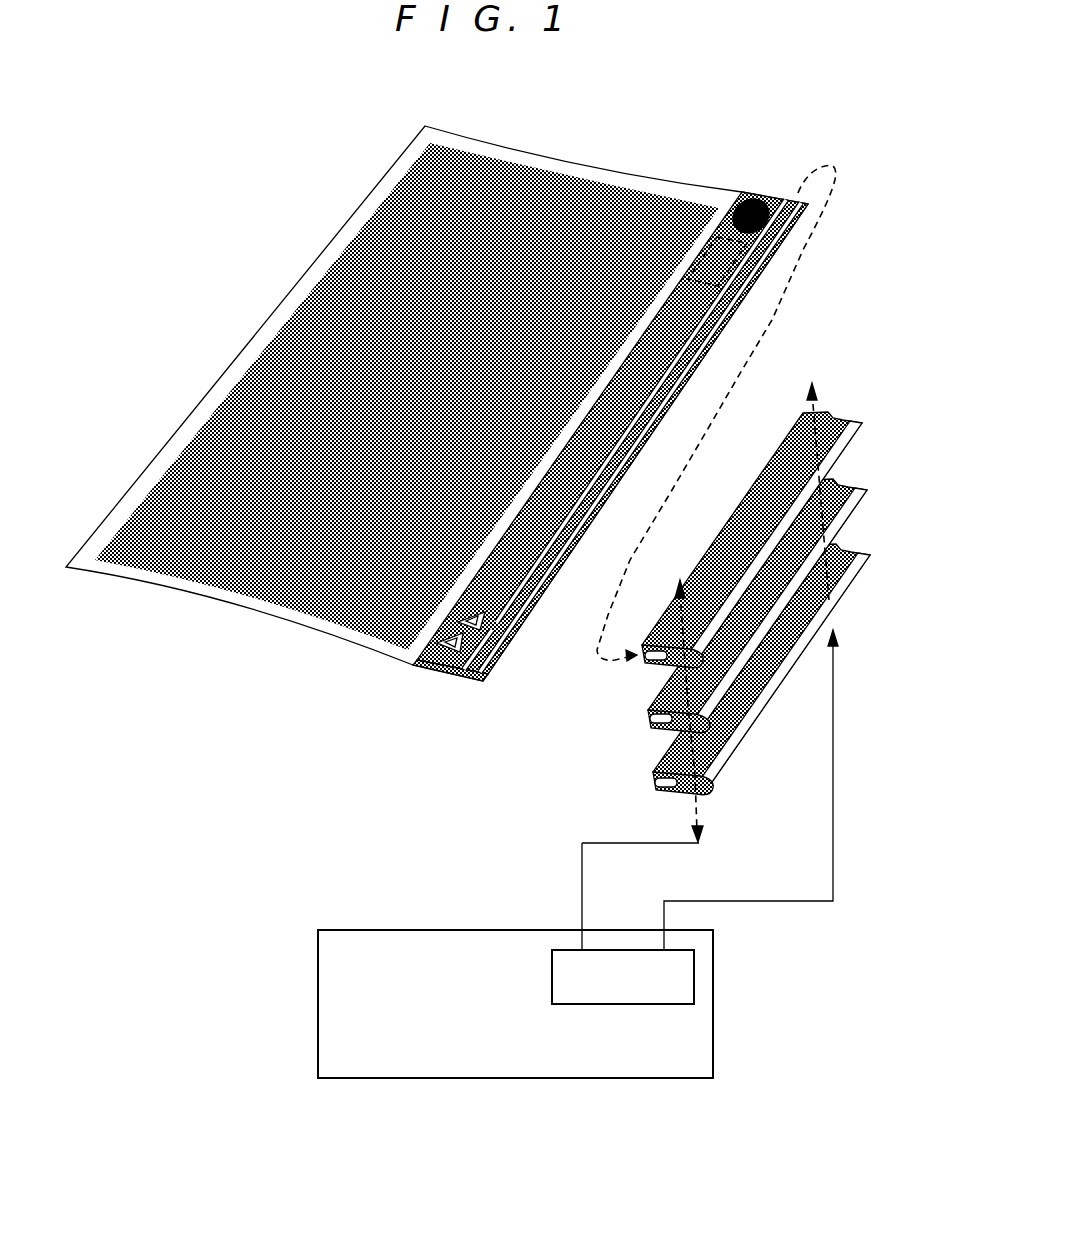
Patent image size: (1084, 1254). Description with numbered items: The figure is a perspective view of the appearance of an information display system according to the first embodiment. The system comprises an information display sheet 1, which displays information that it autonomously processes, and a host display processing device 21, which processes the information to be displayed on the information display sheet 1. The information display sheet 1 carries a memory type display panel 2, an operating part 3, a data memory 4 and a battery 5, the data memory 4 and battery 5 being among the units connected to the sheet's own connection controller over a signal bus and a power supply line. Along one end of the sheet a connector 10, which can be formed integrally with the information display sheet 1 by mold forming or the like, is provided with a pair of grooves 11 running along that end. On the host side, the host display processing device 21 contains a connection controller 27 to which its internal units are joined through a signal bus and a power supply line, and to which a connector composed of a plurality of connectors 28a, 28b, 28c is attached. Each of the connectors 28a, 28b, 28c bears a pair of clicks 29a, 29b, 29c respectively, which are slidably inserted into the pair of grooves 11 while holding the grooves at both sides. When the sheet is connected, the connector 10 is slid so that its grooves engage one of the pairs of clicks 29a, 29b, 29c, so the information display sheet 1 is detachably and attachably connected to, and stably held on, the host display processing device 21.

The information display sheet 1 is at (358, 213).
The memory type display panel 2 is at (312, 293).
The operating part 3 is at (445, 652).
The data memory 4 is at (708, 262).
The battery 5 is at (745, 192).
The connector 10 is at (555, 590).
The pair of grooves 11 is at (520, 590).
The host display processing device 21 is at (318, 992).
The connection controller 27 is at (695, 975).
The connector 28a is at (846, 420).
The connector 28b is at (852, 482).
The connector 28c is at (855, 546).
The pair of clicks 29a is at (641, 655).
The pair of clicks 29b is at (648, 717).
The pair of clicks 29c is at (653, 780).